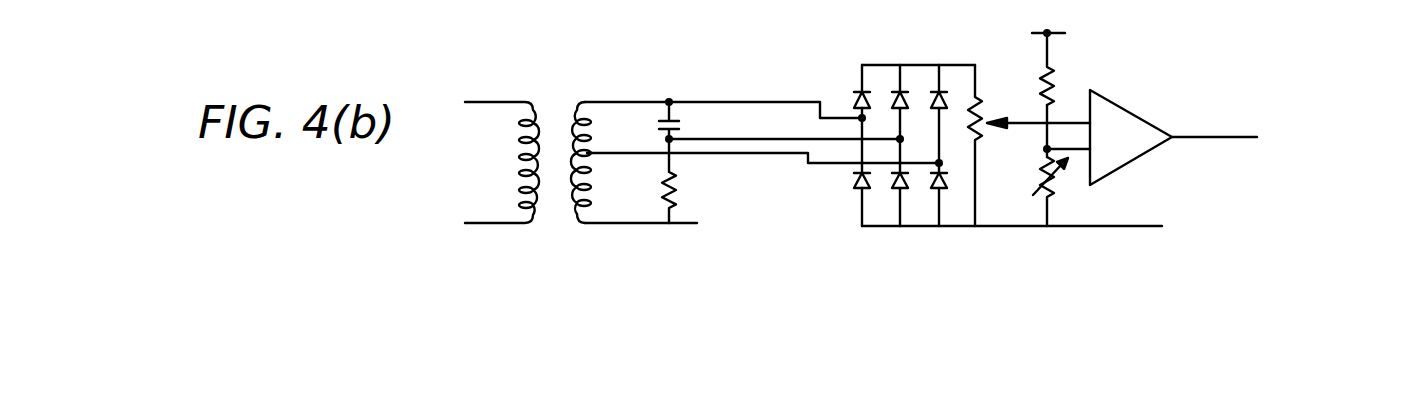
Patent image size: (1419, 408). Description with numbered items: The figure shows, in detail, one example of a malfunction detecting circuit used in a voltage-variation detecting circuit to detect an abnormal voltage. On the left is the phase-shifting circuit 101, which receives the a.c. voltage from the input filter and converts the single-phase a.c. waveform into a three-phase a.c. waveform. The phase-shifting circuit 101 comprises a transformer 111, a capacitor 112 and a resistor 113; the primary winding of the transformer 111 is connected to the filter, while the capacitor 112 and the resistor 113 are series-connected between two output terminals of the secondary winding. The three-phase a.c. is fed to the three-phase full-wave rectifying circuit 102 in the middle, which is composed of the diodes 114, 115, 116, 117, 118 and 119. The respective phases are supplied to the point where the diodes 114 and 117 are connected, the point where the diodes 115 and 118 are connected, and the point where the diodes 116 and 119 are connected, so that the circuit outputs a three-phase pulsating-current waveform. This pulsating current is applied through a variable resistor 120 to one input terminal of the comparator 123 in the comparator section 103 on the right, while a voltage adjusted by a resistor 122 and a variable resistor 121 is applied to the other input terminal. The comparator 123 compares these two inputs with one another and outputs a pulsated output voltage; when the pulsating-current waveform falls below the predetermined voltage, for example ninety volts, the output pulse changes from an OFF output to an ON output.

The phase-shifting circuit 101 is at (722, 275).
The three-phase full-wave rectifying circuit 102 is at (993, 273).
The comparator 103 is at (1207, 273).
The transformer 111 is at (557, 113).
The capacitor 112 is at (683, 120).
The resistor 113 is at (680, 192).
The diode 114 is at (857, 92).
The diode 115 is at (897, 90).
The diode 116 is at (942, 90).
The diode 117 is at (857, 187).
The diode 118 is at (897, 188).
The diode 119 is at (935, 188).
The variable resistor 120 is at (988, 110).
The variable resistor 121 is at (1058, 188).
The resistor 122 is at (1062, 85).
The comparator 123 is at (1143, 117).